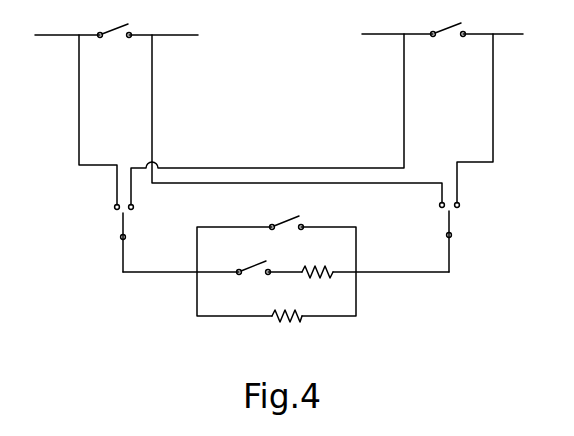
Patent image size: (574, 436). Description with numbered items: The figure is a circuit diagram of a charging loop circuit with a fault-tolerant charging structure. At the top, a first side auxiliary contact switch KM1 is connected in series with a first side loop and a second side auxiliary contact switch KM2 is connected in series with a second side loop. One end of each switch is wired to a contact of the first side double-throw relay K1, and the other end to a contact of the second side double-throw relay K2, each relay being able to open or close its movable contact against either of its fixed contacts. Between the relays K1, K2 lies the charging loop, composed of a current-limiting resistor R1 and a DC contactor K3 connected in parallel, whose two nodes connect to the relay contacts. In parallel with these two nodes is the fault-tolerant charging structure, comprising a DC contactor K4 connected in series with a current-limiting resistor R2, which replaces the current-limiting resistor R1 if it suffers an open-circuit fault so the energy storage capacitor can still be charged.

The first side auxiliary contact switch KM1 is at (115, 42).
The second side auxiliary contact switch KM2 is at (448, 41).
The first side double-throw relay K1 is at (133, 238).
The second side double-throw relay K2 is at (458, 237).
The DC contactor K3 is at (287, 234).
The DC contactor K4 is at (254, 279).
The current-limiting resistor R1 is at (287, 324).
The current-limiting resistor R2 is at (317, 281).